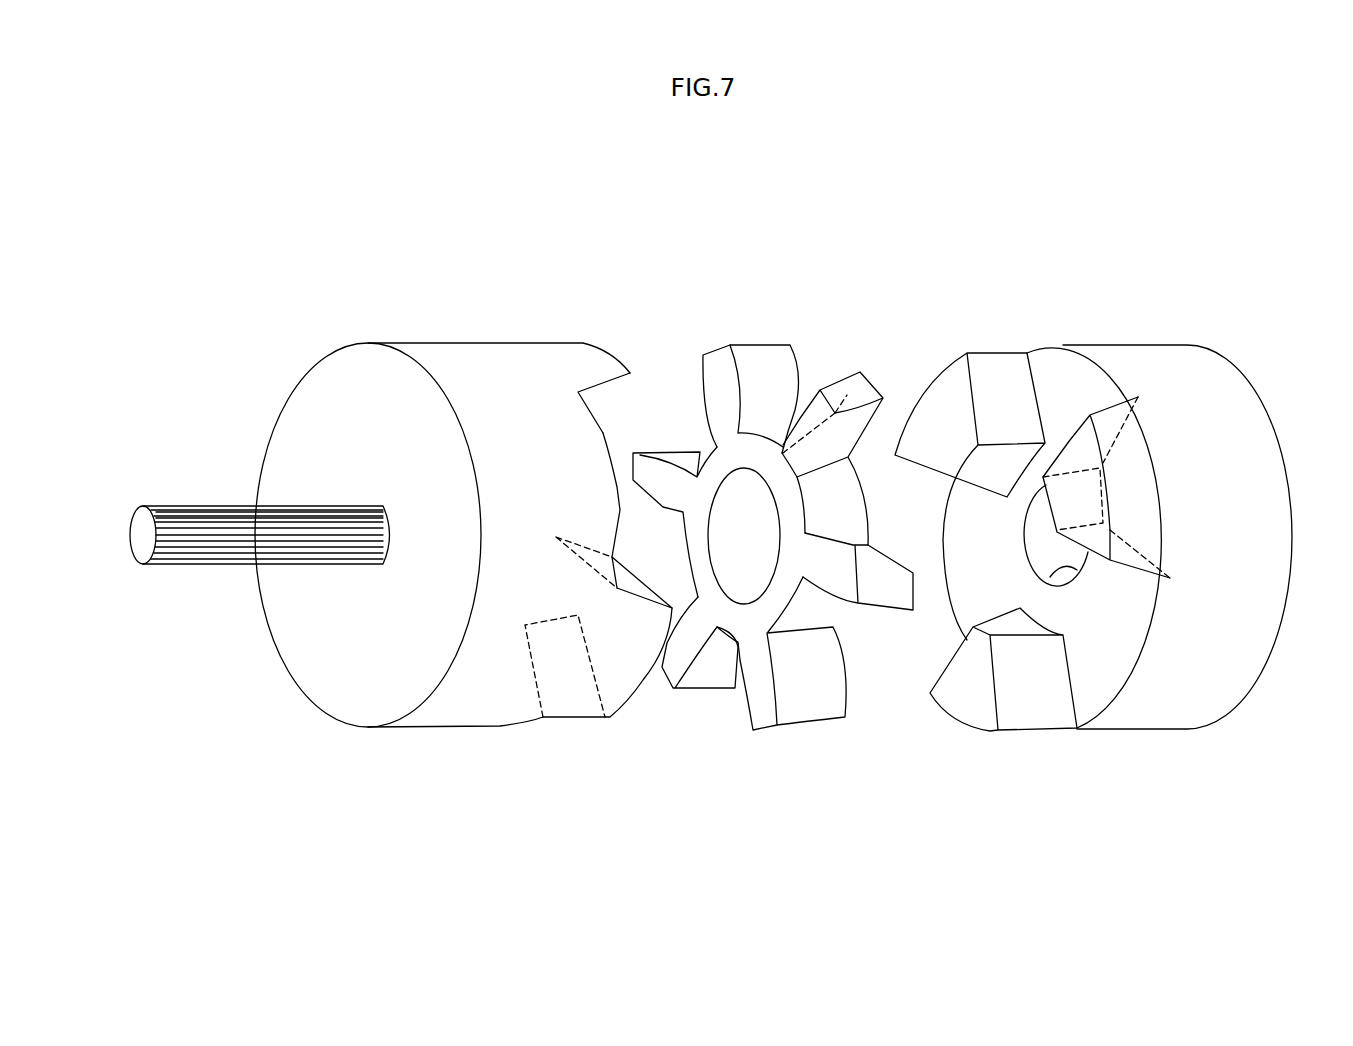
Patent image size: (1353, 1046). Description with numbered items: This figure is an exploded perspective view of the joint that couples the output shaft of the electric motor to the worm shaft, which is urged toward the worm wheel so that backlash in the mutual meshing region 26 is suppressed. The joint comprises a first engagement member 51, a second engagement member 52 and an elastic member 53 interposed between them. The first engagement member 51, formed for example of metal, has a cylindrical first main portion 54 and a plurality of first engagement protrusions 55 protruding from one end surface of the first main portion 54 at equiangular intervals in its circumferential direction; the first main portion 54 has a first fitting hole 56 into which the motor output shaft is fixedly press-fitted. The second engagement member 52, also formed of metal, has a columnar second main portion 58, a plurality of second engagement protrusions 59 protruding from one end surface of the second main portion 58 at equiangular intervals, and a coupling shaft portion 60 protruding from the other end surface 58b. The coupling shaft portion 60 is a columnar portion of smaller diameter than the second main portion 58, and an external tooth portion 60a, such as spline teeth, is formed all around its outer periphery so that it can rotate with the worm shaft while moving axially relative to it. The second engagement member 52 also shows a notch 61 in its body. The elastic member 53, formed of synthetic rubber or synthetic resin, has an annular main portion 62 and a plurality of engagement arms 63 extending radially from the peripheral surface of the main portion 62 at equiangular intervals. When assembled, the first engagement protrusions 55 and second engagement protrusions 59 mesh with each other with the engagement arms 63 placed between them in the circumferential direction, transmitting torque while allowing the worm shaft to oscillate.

The meshing region 26 is at (975, 284).
The first engagement member 51 is at (1119, 343).
The second engagement member 52 is at (470, 343).
The elastic member 53 is at (772, 343).
The first main portion 54 is at (1222, 707).
The first engagement protrusions 55 is at (938, 400).
The first fitting hole 56 is at (1077, 570).
The second main portion 58 is at (452, 718).
The other end surface 58b is at (330, 677).
The second engagement protrusions 59 is at (587, 363).
The coupling shaft portion 60 is at (227, 553).
The external tooth portion 60a is at (190, 507).
The notch 61 is at (618, 390).
The main portion 62 is at (760, 458).
The engagement arms 63 is at (720, 368).